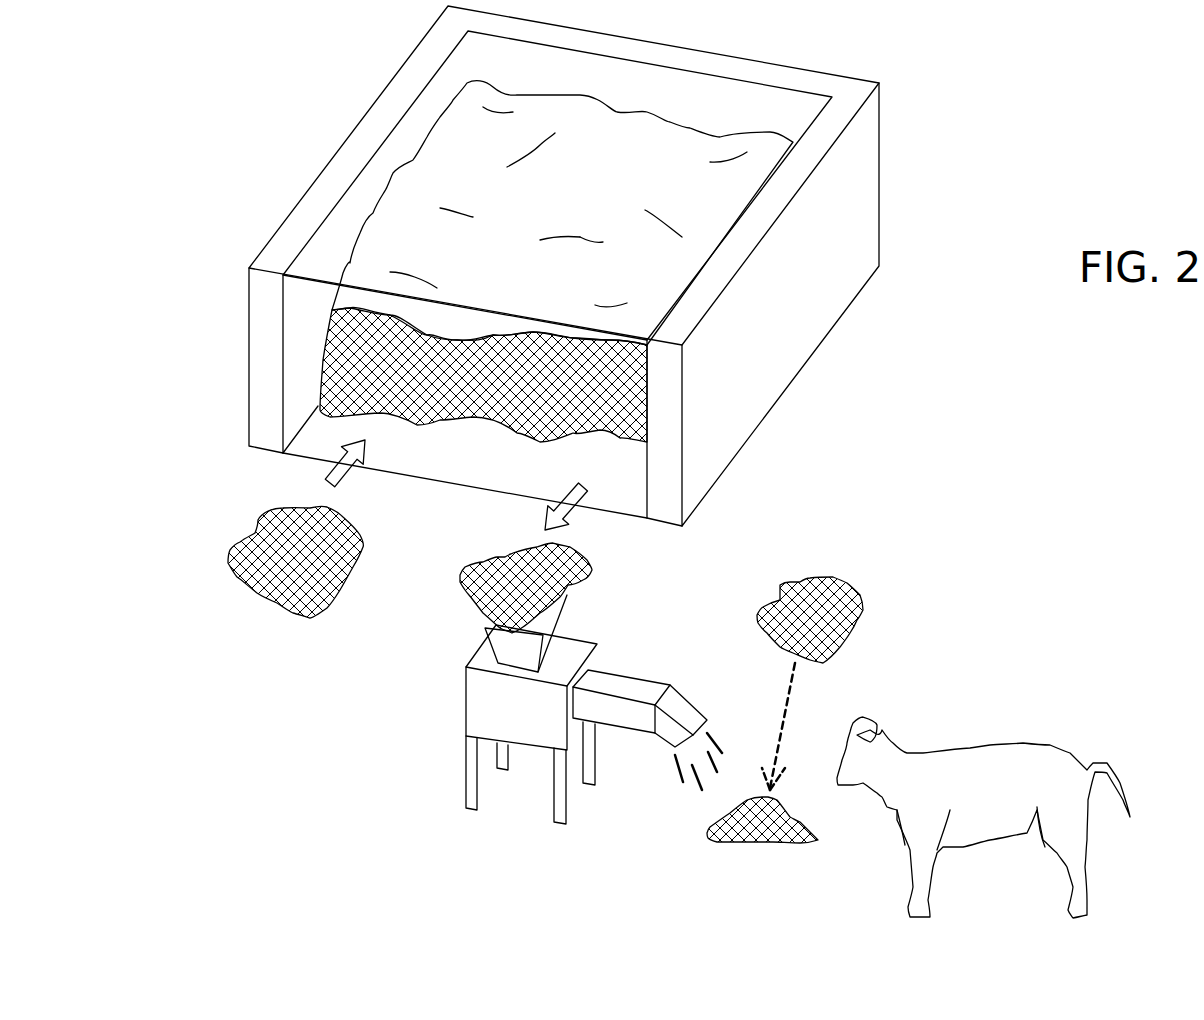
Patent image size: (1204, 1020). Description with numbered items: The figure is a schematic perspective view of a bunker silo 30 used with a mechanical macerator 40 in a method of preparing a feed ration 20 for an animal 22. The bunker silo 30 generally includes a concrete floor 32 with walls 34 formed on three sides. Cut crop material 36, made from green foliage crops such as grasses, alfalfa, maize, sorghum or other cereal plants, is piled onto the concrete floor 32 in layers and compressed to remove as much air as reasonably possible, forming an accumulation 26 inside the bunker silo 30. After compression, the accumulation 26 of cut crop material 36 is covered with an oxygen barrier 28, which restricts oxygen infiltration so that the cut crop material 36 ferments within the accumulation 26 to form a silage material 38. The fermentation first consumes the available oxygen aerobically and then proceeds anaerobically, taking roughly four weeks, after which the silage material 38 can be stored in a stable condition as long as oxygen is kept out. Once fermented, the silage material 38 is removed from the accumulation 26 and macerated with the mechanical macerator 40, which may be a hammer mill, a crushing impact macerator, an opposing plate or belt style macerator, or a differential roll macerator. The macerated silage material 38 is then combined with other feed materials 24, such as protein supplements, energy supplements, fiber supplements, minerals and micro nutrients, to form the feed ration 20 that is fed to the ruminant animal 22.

The feed ration 20 is at (763, 845).
The animal 22 is at (975, 763).
The other feed materials 24 is at (843, 592).
The accumulation 26 is at (556, 276).
The oxygen barrier 28 is at (638, 387).
The bunker silo 30 is at (582, 271).
The concrete floor 32 is at (406, 450).
The walls 34 is at (267, 380).
The cut crop material 36 is at (258, 585).
The silage material 38 is at (490, 598).
The mechanical macerator 40 is at (573, 647).